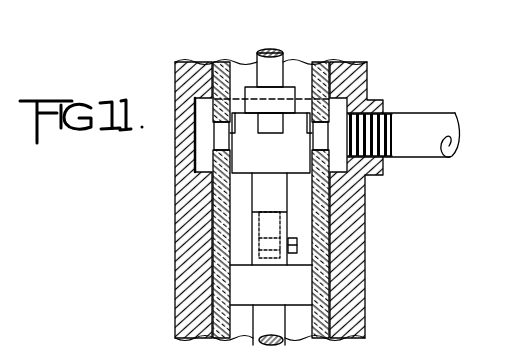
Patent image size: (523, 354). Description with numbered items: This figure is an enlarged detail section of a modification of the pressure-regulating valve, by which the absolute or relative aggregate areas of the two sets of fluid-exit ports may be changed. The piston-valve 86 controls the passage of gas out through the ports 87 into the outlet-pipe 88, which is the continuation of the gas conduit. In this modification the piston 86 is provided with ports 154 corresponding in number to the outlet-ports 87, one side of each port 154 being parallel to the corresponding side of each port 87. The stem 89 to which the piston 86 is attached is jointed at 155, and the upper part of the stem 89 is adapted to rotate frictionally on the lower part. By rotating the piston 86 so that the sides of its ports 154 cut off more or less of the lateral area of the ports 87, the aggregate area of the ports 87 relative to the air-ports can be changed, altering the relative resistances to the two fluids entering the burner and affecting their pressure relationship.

The piston-valve 86 is at (270, 150).
The ports 87 is at (223, 138).
The outlet-pipe 88 is at (417, 122).
The stem 89 is at (288, 223).
The ports 154 is at (270, 123).
The joint 155 is at (250, 216).